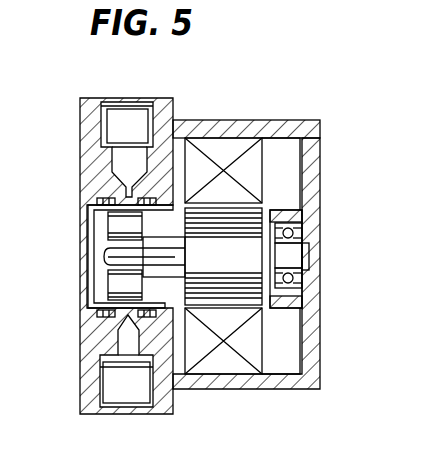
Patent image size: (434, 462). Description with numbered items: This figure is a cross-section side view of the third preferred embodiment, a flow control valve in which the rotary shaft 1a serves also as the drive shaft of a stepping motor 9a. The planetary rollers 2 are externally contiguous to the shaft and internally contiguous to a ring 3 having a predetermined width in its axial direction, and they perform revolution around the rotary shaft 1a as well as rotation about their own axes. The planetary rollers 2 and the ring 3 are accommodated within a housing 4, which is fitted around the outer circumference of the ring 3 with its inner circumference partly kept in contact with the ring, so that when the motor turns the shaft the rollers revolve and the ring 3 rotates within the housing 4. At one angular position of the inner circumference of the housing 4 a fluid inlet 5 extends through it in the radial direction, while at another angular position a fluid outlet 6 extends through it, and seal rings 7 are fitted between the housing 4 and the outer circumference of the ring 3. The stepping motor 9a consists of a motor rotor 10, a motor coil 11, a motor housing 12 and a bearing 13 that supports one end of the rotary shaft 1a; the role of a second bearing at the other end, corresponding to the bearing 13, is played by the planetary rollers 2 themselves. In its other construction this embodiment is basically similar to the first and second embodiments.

The rotary shaft 1a is at (110, 259).
The planetary rollers 2 is at (110, 225).
The ring 3 is at (90, 206).
The housing 4 is at (80, 132).
The fluid inlet 5 is at (129, 98).
The fluid outlet 6 is at (123, 416).
The seal rings 7 is at (82, 316).
The stepping motor 9a is at (317, 121).
The motor rotor 10 is at (297, 210).
The motor coil 11 is at (257, 162).
The motor housing 12 is at (238, 120).
The bearing 13 is at (299, 274).